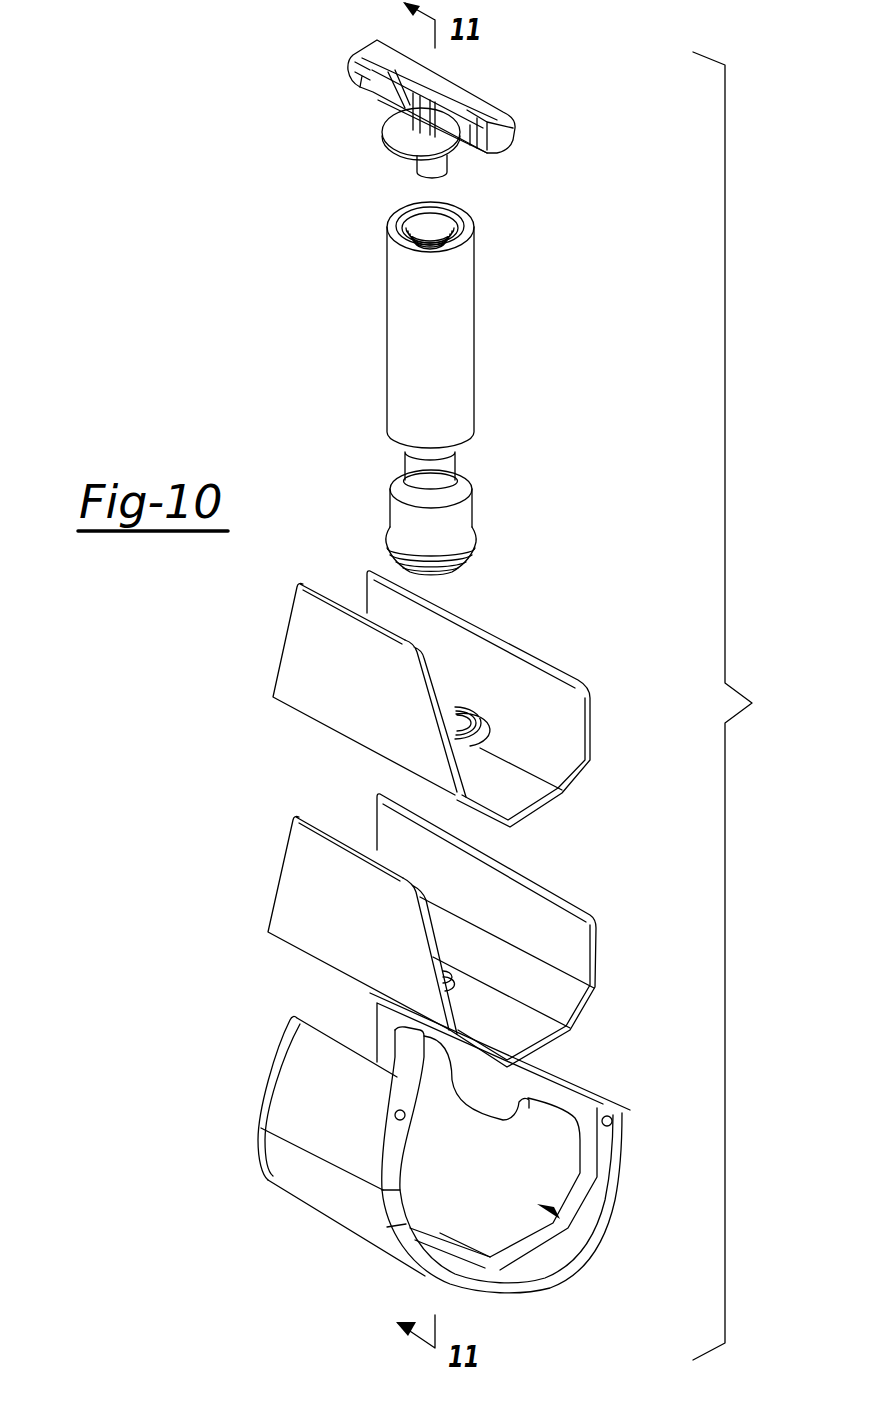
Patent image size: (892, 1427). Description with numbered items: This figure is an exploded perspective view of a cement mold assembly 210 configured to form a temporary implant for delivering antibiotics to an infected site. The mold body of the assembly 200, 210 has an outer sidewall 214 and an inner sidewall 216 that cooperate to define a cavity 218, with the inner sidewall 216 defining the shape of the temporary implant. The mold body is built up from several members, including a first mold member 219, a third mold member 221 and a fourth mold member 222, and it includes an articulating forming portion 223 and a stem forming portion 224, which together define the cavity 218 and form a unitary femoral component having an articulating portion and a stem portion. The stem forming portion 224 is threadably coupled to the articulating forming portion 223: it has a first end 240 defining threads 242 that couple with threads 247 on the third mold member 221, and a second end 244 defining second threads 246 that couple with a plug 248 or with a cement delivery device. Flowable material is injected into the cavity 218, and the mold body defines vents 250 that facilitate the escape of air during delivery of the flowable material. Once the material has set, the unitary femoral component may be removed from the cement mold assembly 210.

The mounting assembly 200 is at (393, 930).
The cement mold assembly 210 is at (744, 706).
The outer sidewall 214 is at (430, 1143).
The inner sidewall 216 is at (307, 898).
The cavity 218 is at (558, 1214).
The first mold member 219 is at (292, 1147).
The third mold member 221 is at (392, 699).
The fourth mold member 222 is at (395, 335).
The articulating forming portion 223 is at (307, 1185).
The stem forming portion 224 is at (455, 375).
The first end 240 is at (463, 562).
The threads 242 is at (395, 557).
The second end 244 is at (463, 253).
The second threads 246 is at (447, 217).
The threads 247 is at (467, 699).
The plug 248 is at (503, 128).
The vents 250 is at (406, 1118).